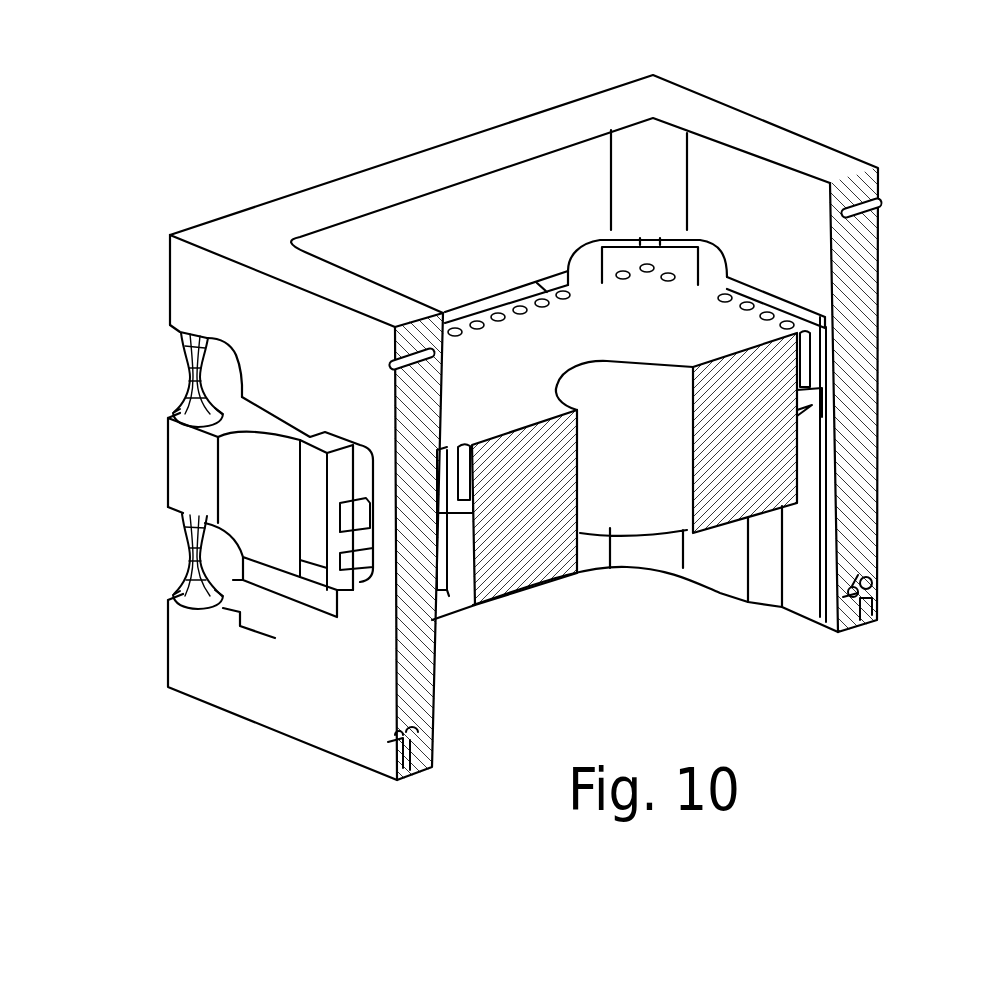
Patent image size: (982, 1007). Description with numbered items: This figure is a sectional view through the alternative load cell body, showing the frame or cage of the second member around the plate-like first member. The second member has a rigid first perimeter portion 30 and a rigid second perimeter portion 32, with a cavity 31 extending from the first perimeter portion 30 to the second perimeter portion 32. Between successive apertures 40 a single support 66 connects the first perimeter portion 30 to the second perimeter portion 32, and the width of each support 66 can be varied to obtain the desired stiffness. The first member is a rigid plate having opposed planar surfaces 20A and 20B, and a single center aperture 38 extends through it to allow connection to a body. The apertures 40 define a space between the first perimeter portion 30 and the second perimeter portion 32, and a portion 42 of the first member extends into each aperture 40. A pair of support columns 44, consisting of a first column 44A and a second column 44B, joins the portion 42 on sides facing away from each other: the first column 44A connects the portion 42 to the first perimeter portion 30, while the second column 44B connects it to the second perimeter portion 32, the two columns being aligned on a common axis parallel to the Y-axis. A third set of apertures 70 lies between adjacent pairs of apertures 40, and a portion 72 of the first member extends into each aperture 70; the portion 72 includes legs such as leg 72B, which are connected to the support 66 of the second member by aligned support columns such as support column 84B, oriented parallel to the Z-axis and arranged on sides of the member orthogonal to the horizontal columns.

The first perimeter portion 30 is at (880, 184).
The cavity 31 is at (532, 185).
The second perimeter portion 32 is at (878, 530).
The center aperture 38 is at (643, 362).
The apertures 40 is at (226, 337).
The portion 42 is at (168, 452).
The pair of support columns 44 is at (136, 440).
The first column 44A is at (187, 377).
The second column 44B is at (183, 535).
The support 66 is at (866, 398).
The apertures 70 is at (921, 240).
The portion 72 is at (828, 360).
The leg 72B is at (312, 562).
The support column 84B is at (362, 550).
The planar surface 20A is at (690, 318).
The planar surface 20B is at (497, 603).